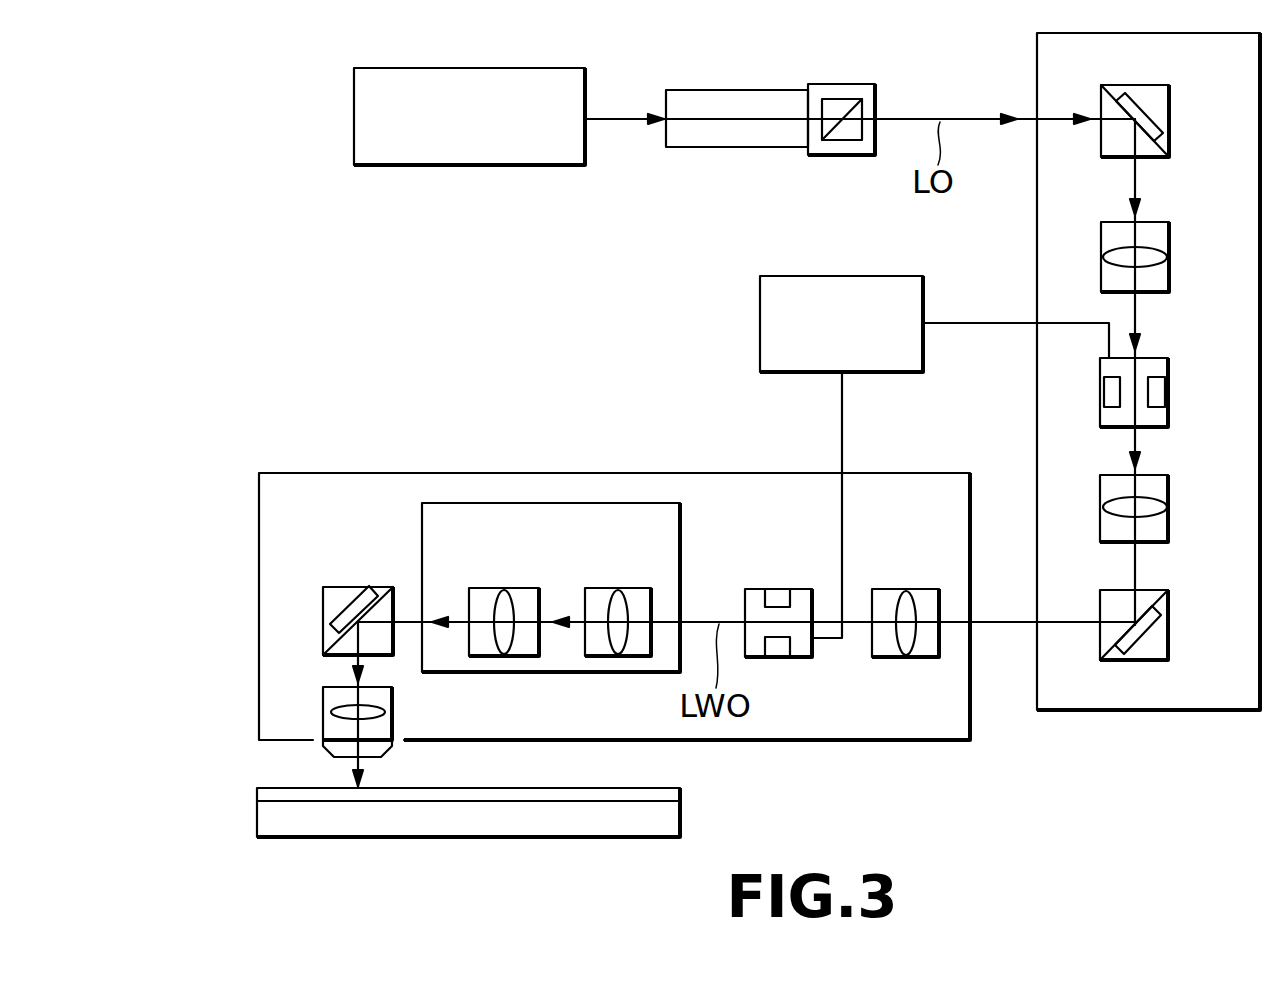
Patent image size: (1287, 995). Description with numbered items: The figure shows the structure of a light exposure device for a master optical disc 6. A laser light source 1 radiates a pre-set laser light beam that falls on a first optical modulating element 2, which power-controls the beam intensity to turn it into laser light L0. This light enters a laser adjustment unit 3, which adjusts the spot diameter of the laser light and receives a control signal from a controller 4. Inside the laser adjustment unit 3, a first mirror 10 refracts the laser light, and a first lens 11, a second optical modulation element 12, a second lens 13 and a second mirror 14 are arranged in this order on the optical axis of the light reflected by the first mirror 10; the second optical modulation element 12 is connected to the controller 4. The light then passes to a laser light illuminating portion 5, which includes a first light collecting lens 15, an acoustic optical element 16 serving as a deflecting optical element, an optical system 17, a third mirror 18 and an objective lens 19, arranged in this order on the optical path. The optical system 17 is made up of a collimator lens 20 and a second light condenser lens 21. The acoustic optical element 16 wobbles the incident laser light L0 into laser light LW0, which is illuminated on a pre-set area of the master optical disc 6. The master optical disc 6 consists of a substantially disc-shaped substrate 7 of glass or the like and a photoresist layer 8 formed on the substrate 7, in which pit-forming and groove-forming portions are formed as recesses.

The laser light source 1 is at (540, 165).
The first optical modulating element 2 is at (758, 147).
The laser adjustment unit 3 is at (1037, 228).
The controller 4 is at (760, 318).
The laser light illuminating portion 5 is at (523, 472).
The master optical disc 6 is at (503, 795).
The substrate 7 is at (257, 822).
The photoresist layer 8 is at (257, 793).
The first mirror 10 is at (1170, 100).
The first lens 11 is at (1170, 238).
The second optical modulation element 12 is at (1170, 362).
The second lens 13 is at (1170, 482).
The second mirror 14 is at (1170, 598).
The first light collecting lens 15 is at (925, 589).
The acoustic optical element 16 is at (782, 589).
The optical system 17 is at (681, 526).
The third mirror 18 is at (358, 587).
The objective lens 19 is at (393, 708).
The collimator lens 20 is at (607, 588).
The second light condenser lens 21 is at (509, 588).